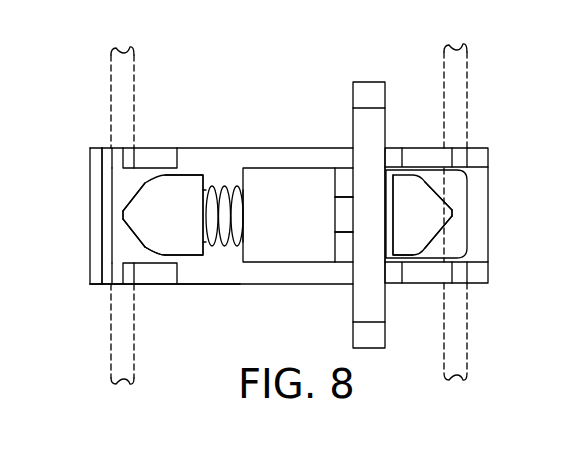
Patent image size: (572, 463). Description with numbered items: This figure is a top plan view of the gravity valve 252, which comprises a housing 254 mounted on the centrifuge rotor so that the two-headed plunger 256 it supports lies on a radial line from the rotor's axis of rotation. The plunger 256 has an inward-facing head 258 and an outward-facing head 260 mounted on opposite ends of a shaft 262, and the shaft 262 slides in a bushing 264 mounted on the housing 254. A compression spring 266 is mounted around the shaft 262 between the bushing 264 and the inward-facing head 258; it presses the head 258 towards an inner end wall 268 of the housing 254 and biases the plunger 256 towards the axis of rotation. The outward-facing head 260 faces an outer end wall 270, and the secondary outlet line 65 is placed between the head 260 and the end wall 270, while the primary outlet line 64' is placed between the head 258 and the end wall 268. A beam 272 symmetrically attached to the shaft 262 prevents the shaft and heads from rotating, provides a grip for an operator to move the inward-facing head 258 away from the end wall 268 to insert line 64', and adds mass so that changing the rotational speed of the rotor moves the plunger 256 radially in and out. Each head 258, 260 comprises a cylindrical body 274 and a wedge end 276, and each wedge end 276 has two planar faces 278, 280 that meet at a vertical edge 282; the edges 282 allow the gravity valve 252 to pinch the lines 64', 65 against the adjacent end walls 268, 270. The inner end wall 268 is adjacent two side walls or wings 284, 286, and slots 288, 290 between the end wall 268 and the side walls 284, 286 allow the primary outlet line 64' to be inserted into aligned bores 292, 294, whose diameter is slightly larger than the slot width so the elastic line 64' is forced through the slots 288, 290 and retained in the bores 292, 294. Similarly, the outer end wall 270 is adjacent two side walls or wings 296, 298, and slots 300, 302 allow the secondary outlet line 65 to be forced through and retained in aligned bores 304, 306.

The gravity valve 252 is at (231, 96).
The housing 254 is at (283, 284).
The two-headed plunger 256 is at (343, 178).
The inward-facing head 258 is at (143, 190).
The outward-facing head 260 is at (430, 198).
The shaft 262 is at (345, 233).
The bushing 264 is at (289, 215).
The compression spring 266 is at (225, 187).
The inner end wall 268 is at (91, 227).
The outer end wall 270 is at (488, 212).
The beam 272 is at (385, 82).
The cylindrical body 274 is at (190, 250).
The wedge end 276 is at (135, 226).
The planar face 278 is at (142, 247).
The planar face 280 is at (133, 212).
The vertical edge 282 is at (131, 215).
The side wall 284 is at (170, 158).
The side wall 286 is at (158, 277).
The slot 288 is at (122, 278).
The slot 290 is at (123, 177).
The bore 292 is at (133, 283).
The bore 294 is at (134, 150).
The side wall 296 is at (440, 275).
The side wall 298 is at (435, 158).
The slot 300 is at (467, 283).
The slot 302 is at (465, 147).
The bore 304 is at (443, 287).
The bore 306 is at (445, 143).
The primary outlet line 64' is at (144, 215).
The secondary outlet line 65 is at (468, 100).